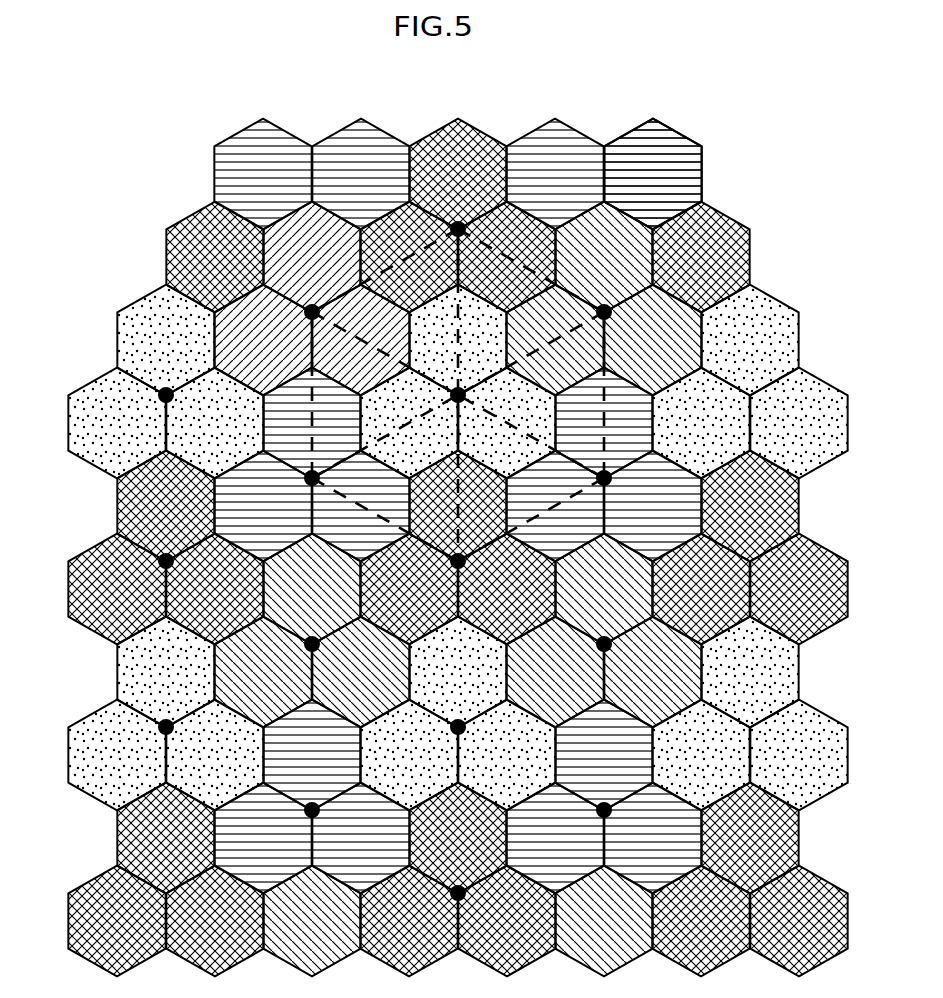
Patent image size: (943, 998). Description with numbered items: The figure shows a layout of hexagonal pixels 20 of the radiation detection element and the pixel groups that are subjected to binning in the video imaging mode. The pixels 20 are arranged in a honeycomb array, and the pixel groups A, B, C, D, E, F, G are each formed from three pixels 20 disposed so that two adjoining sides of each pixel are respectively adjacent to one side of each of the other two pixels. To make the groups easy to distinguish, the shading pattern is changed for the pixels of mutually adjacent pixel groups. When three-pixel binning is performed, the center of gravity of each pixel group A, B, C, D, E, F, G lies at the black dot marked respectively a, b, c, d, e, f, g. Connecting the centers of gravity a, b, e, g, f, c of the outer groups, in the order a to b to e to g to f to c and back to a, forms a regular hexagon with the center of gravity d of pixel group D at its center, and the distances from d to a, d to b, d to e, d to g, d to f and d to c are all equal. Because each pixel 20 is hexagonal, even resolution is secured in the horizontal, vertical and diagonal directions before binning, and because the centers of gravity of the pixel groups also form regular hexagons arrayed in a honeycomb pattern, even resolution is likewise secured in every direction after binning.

The pixel 20 is at (506, 151).
The pixel group A is at (287, 238).
The pixel group B is at (205, 480).
The pixel group C is at (477, 130).
The pixel group D is at (523, 405).
The pixel group E is at (523, 596).
The pixel group F is at (620, 268).
The pixel group G is at (680, 508).
The center of gravity a is at (311, 293).
The center of gravity b is at (295, 491).
The center of gravity c is at (458, 214).
The center of gravity d is at (474, 374).
The center of gravity e is at (475, 573).
The center of gravity f is at (604, 297).
The center of gravity g is at (620, 489).